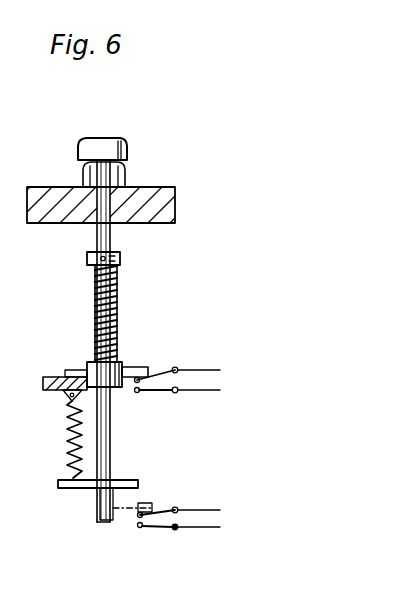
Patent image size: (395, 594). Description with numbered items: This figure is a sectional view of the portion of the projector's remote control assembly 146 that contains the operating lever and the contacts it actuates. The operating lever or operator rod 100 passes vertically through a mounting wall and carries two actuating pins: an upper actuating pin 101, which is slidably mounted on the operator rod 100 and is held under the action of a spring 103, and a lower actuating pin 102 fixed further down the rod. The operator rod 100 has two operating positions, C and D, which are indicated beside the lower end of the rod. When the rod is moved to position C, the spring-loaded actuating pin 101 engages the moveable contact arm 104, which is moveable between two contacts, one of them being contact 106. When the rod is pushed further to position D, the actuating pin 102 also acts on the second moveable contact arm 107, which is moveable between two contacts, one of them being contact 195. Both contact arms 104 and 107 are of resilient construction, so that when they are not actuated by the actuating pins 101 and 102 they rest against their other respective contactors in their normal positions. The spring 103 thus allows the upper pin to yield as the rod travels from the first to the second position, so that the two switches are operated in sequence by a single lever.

The remote control assembly 146 is at (155, 203).
The operating lever or operator rod 100 is at (115, 250).
The spring 103 is at (96, 295).
The actuating pin 101 is at (136, 367).
The moveable contact arm 104 is at (161, 368).
The contact 106 is at (137, 393).
The actuating pin 102 is at (140, 478).
The moveable contact arm 107 is at (163, 507).
The contact 195 is at (140, 528).
The operating position C is at (98, 506).
The operating position D is at (100, 522).